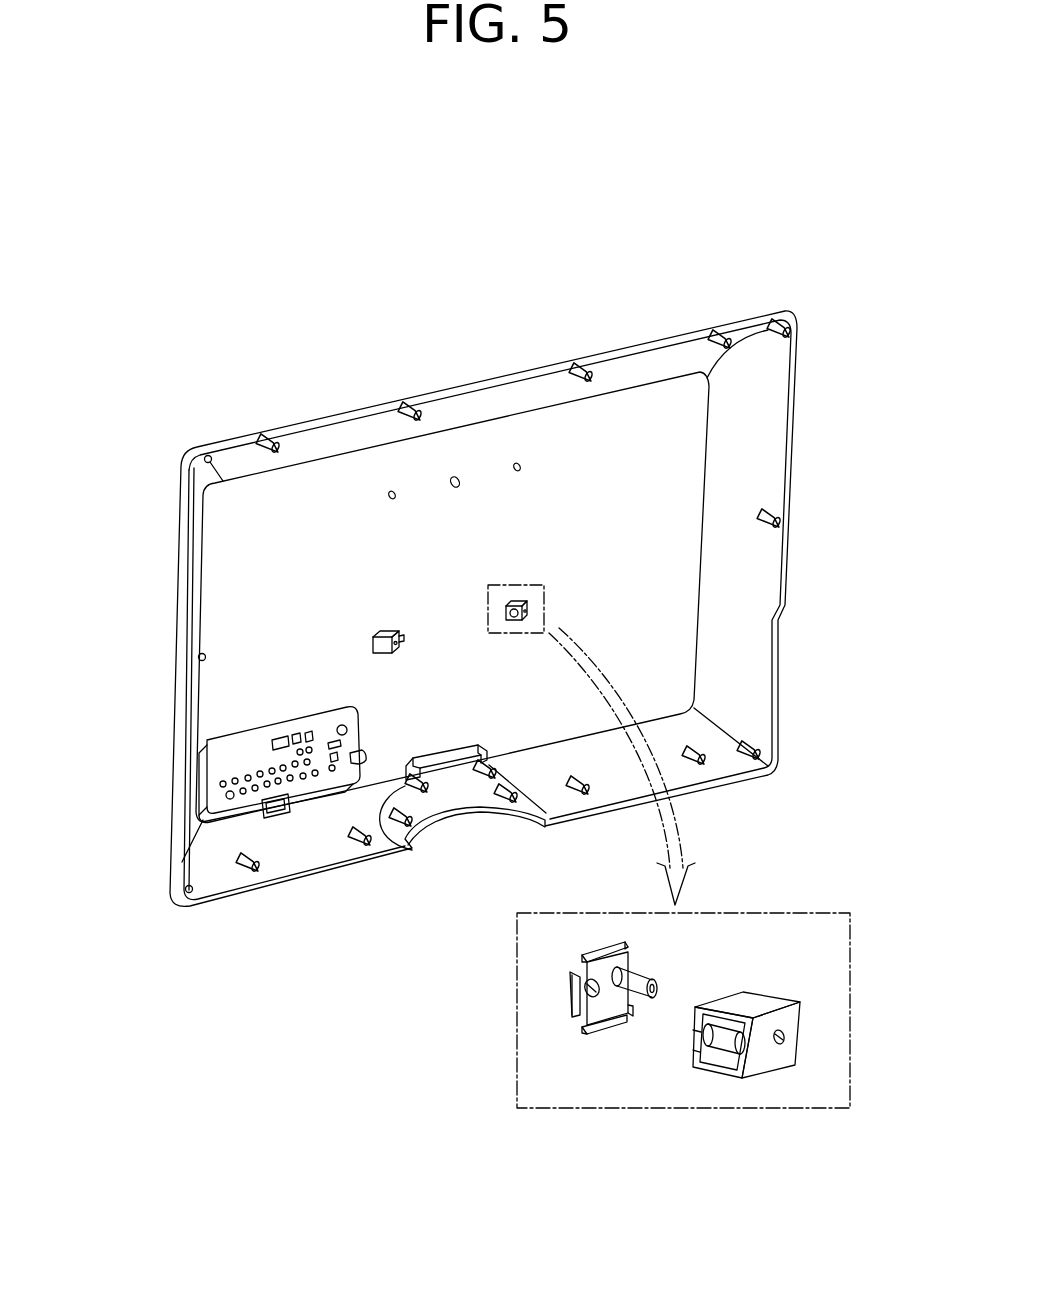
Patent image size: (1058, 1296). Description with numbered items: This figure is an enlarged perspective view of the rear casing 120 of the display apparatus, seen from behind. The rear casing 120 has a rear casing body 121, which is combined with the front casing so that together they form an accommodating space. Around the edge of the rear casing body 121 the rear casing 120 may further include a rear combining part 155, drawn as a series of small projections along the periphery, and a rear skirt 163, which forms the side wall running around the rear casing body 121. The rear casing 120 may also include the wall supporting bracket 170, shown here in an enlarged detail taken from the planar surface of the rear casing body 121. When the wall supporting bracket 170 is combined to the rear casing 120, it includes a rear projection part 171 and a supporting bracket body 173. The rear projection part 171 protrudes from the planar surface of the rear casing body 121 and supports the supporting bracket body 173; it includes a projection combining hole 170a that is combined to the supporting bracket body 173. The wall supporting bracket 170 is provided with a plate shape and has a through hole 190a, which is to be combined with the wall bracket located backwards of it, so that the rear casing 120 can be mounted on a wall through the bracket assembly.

The rear casing 120 is at (192, 322).
The rear casing body 121 is at (763, 447).
The rear skirt 163 is at (793, 553).
The rear combining part 155 is at (188, 886).
The wall supporting bracket 170 is at (632, 1177).
The rear projection part 171 is at (612, 1024).
The supporting bracket body 173 is at (706, 1072).
The projection combining hole 170a is at (786, 1035).
The through hole 190a is at (578, 974).